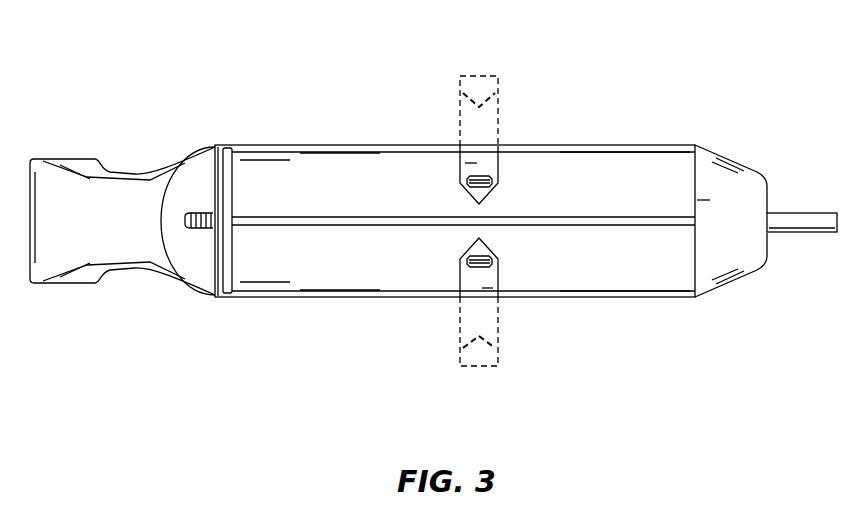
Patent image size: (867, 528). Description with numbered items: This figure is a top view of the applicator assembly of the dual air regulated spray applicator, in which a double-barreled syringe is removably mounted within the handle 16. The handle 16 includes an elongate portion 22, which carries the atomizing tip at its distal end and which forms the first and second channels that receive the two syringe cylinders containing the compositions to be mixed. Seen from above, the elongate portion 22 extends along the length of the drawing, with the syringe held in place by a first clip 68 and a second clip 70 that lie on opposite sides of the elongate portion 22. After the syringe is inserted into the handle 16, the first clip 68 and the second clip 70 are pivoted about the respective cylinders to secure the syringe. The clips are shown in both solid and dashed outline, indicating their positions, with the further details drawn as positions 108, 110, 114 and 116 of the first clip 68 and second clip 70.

The handle 16 is at (203, 73).
The elongate portion 22 is at (663, 299).
The first clip 68 is at (444, 100).
The second clip 70 is at (444, 336).
The upper clamp retracted position 108 is at (497, 113).
The upper clamp engaged position 110 is at (498, 170).
The lower clamp retracted position 114 is at (497, 330).
The lower clamp engaged position 116 is at (498, 273).